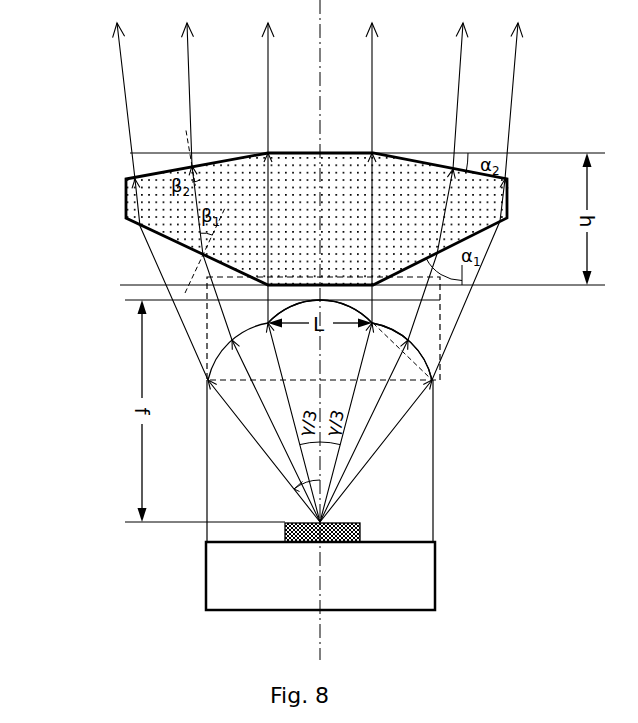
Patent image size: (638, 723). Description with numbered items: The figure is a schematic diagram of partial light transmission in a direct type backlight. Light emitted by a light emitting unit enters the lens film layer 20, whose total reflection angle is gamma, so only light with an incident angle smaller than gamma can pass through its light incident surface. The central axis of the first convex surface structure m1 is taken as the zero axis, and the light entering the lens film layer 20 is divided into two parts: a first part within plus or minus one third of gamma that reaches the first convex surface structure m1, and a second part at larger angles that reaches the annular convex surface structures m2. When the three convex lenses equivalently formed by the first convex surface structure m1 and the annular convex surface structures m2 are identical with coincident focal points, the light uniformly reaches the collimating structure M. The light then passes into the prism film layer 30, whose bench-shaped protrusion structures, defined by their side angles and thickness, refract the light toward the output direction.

The prism film layer 30 is at (114, 199).
The lens film layer 20 is at (447, 463).
The collimating structure M is at (452, 331).
The first convex surface structure m1 is at (343, 310).
The annular convex surface structures m2 is at (423, 357).